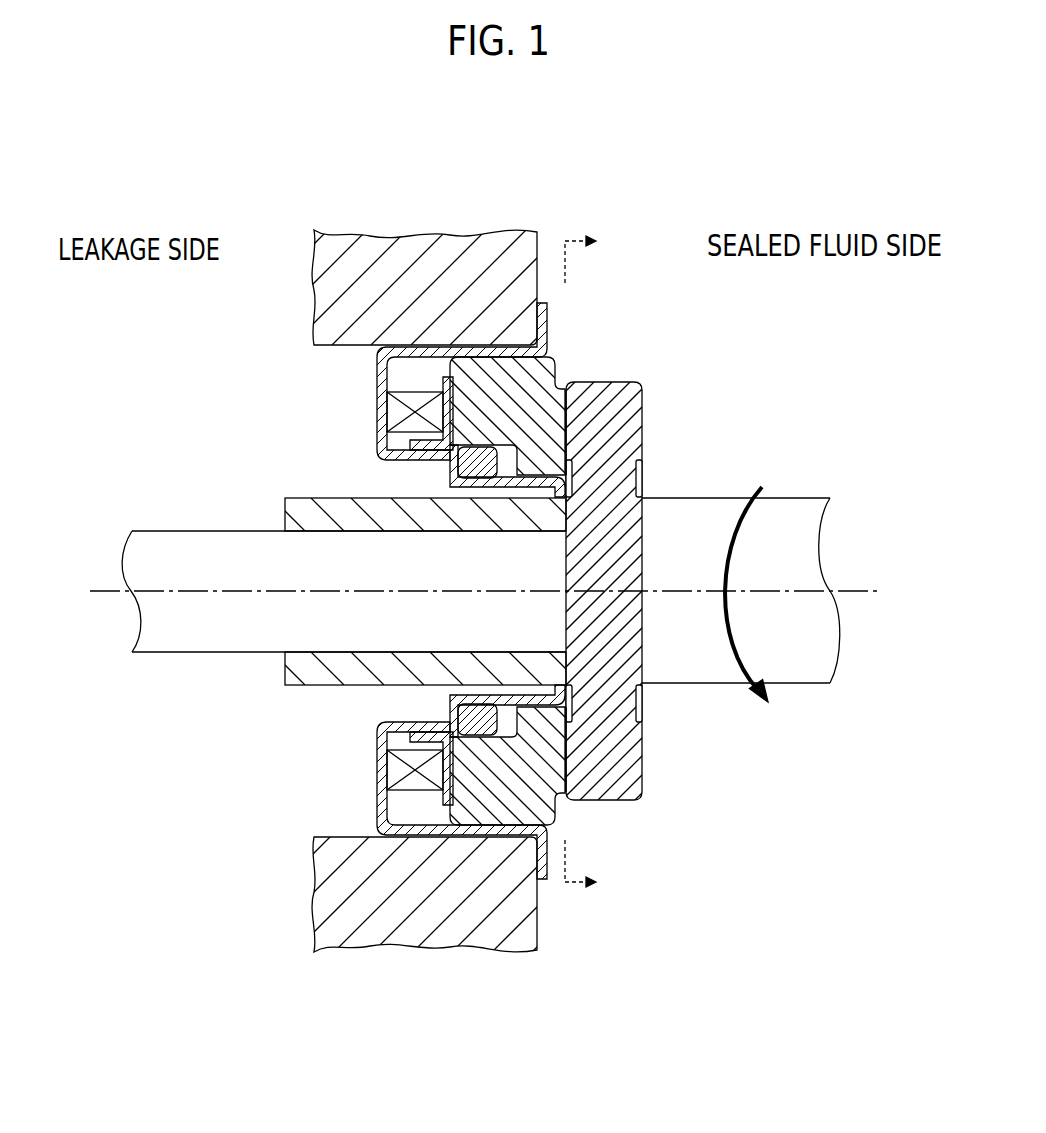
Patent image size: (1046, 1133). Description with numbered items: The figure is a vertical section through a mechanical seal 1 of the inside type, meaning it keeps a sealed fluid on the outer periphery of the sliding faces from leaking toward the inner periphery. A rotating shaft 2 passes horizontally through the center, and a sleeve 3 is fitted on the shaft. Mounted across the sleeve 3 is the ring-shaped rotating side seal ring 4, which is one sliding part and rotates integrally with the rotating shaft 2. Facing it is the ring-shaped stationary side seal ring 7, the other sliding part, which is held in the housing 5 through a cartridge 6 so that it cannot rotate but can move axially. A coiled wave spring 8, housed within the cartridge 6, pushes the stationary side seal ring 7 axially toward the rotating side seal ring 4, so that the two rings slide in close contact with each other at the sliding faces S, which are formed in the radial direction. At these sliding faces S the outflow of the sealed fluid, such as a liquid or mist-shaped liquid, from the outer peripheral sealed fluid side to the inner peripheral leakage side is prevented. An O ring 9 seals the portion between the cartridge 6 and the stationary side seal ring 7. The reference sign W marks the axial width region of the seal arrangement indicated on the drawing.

The mechanical seal 1 is at (609, 272).
The rotating shaft 2 is at (469, 578).
The sleeve 3 is at (336, 668).
The rotating side seal ring 4 is at (628, 450).
The housing 5 is at (432, 245).
The cartridge 6 is at (377, 365).
The stationary side seal ring 7 is at (556, 372).
The coiled wave spring 8 is at (395, 412).
The O ring 9 is at (452, 478).
The sliding faces S is at (562, 412).
The seal width direction W is at (579, 567).